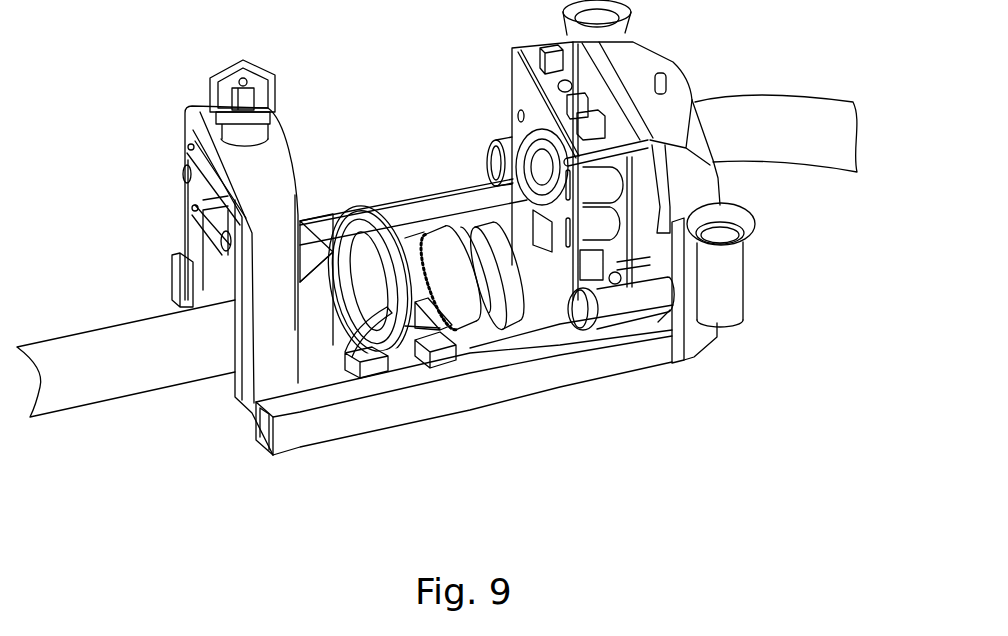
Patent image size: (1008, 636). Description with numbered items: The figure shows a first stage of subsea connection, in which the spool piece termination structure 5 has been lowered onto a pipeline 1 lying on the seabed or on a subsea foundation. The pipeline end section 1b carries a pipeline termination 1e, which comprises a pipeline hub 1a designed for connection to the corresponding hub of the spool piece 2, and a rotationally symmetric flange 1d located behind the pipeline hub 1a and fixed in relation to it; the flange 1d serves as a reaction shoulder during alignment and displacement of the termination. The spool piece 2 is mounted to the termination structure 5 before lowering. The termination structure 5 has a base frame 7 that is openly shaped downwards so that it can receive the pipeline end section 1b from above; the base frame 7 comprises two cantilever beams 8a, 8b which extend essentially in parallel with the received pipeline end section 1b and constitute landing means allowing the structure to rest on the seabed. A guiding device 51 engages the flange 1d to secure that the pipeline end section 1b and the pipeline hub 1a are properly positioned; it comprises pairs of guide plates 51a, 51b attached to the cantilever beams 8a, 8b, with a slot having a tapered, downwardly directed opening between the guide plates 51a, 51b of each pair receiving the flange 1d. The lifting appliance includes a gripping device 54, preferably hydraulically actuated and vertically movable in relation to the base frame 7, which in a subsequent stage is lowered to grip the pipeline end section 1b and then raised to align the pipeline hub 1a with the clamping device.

The pipeline 1 is at (148, 325).
The pipeline hub 1a is at (510, 277).
The pipeline end section 1b is at (337, 328).
The flange 1d is at (368, 212).
The pipeline termination 1e is at (494, 320).
The spool piece 2 is at (772, 108).
The termination structure 5 is at (449, 100).
The base frame 7 is at (432, 187).
The cantilever beam 8a is at (440, 398).
The cantilever beam 8b is at (330, 224).
The guiding device 51 is at (398, 368).
The guide plate 51a is at (380, 320).
The guide plate 51b is at (430, 313).
The gripping device 54 is at (190, 207).